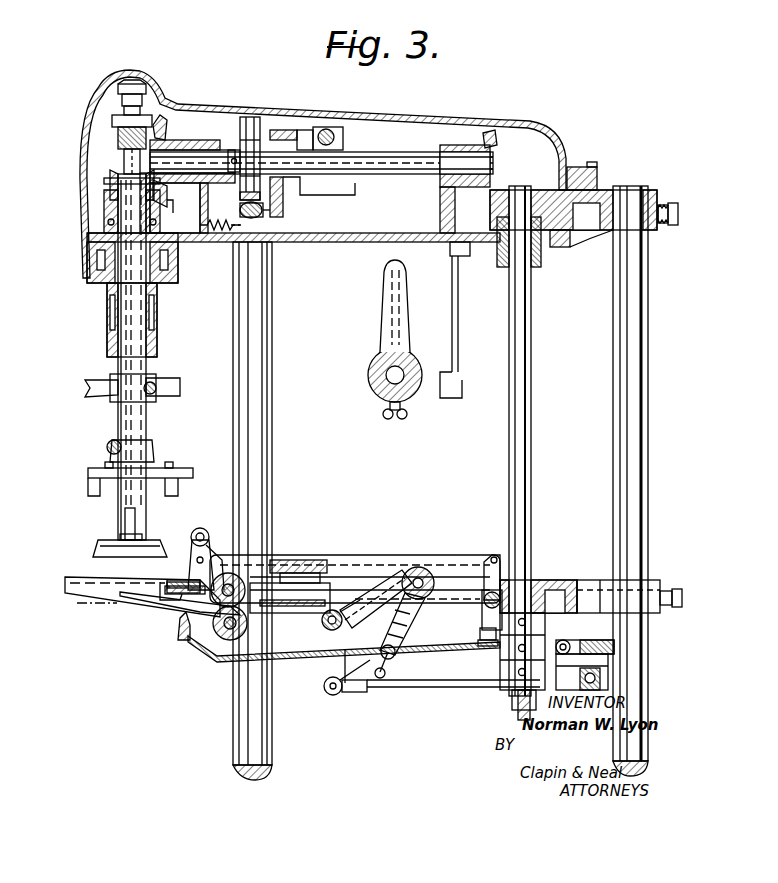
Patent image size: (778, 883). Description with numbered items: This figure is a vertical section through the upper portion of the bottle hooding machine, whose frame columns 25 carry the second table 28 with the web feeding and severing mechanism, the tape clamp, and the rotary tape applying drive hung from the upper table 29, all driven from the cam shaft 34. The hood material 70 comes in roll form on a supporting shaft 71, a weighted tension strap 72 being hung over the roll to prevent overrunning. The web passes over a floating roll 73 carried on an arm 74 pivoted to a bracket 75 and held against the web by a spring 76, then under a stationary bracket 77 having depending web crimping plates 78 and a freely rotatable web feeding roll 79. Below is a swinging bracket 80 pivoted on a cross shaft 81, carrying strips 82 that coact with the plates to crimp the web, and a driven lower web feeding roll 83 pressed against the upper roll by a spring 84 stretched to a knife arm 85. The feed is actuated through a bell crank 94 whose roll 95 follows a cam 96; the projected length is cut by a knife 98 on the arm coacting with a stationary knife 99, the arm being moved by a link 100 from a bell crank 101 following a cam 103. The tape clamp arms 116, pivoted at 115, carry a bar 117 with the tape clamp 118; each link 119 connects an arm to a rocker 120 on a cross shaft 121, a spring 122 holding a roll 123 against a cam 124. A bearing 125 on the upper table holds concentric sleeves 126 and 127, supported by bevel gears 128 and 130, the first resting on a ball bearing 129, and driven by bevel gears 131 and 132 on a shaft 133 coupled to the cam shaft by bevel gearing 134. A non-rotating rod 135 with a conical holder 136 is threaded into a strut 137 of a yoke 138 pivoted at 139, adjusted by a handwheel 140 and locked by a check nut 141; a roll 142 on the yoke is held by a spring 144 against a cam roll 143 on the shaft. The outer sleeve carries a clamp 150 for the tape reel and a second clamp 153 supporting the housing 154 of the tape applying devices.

The columns 25 is at (262, 433).
The second table 28 is at (640, 590).
The upper table 29 is at (385, 243).
The cam shaft 34 is at (531, 485).
The hood material 70 is at (116, 604).
The supporting shaft 71 is at (378, 380).
The weighted tension strap 72 is at (462, 390).
The floating roll 73 is at (425, 568).
The arm 74 is at (400, 640).
The bracket 75 is at (360, 612).
The spring 76 is at (372, 688).
The stationary bracket 77 is at (300, 560).
The web crimping plates 78 is at (245, 575).
The web feeding roll 79 is at (262, 550).
The swinging bracket 80 is at (300, 650).
The cross shaft 81 is at (340, 612).
The strips 82 is at (290, 597).
The lower web feeding roll 83 is at (222, 650).
The spring 84 is at (336, 696).
The knife arm 85 is at (343, 660).
The bell crank 94 is at (614, 647).
The roll 95 is at (608, 668).
The cam 96 is at (560, 640).
The knife 98 is at (176, 630).
The stationary knife 99 is at (185, 600).
The link 100 is at (416, 690).
The bell crank 101 is at (500, 668).
The cam 103 is at (510, 692).
The pivot 115 is at (212, 545).
The arms 116 is at (190, 550).
The bar 117 is at (185, 580).
The tape clamp 118 is at (165, 598).
The link 119 is at (385, 560).
The rocker 120 is at (505, 572).
The cross shaft 121 is at (484, 602).
The spring 122 is at (488, 556).
The roll 123 is at (480, 632).
The cam 124 is at (480, 646).
The bearing 125 is at (107, 300).
The outer sleeve 126 is at (122, 322).
The inner sleeve 127 is at (140, 342).
The bevel gear 128 is at (104, 218).
The ball bearing 129 is at (87, 250).
The bevel gear 130 is at (110, 185).
The bevel gear 131 is at (175, 208).
The bevel gear 132 is at (166, 122).
The shaft 133 is at (395, 157).
The bevel gearing 134 is at (555, 170).
The rod 135 is at (124, 170).
The conical holder 136 is at (93, 552).
The strut 137 is at (124, 147).
The yoke 138 is at (226, 140).
The pivot 139 is at (330, 128).
The handwheel 140 is at (142, 85).
The check nut 141 is at (112, 120).
The roll 142 is at (262, 217).
The cam roll 143 is at (250, 117).
The spring 144 is at (218, 242).
The clamp 150 is at (100, 386).
The second clamp 153 is at (140, 450).
The housing 154 is at (88, 486).